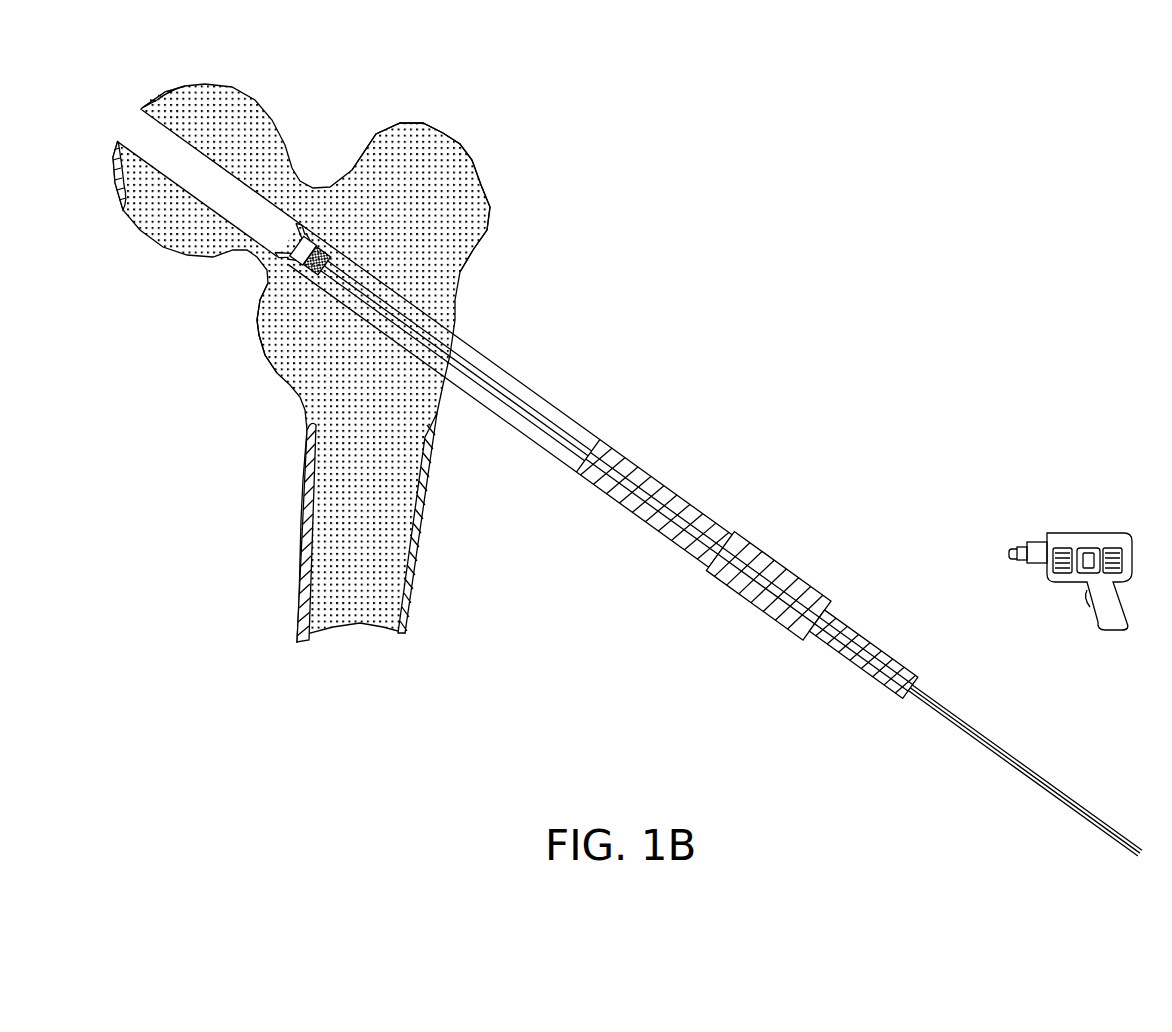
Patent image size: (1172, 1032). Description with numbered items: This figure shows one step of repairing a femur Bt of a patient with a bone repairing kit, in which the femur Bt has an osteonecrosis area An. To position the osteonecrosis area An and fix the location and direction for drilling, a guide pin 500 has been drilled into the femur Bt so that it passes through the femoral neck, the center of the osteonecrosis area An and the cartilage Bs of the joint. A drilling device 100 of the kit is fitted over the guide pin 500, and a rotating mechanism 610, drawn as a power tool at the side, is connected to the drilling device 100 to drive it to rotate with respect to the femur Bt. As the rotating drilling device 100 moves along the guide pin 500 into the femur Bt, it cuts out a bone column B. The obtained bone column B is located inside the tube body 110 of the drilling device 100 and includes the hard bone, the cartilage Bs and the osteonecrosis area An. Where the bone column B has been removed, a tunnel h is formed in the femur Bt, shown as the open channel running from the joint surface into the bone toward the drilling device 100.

The tunnel h is at (128, 126).
The osteonecrosis area An is at (306, 222).
The femur Bt is at (489, 148).
The cartilage Bs is at (268, 283).
The bone column B is at (493, 375).
The guide pin 500 is at (545, 402).
The tube body 110 is at (600, 437).
The drilling device 100 is at (799, 545).
The rotating mechanism 610 is at (1086, 542).